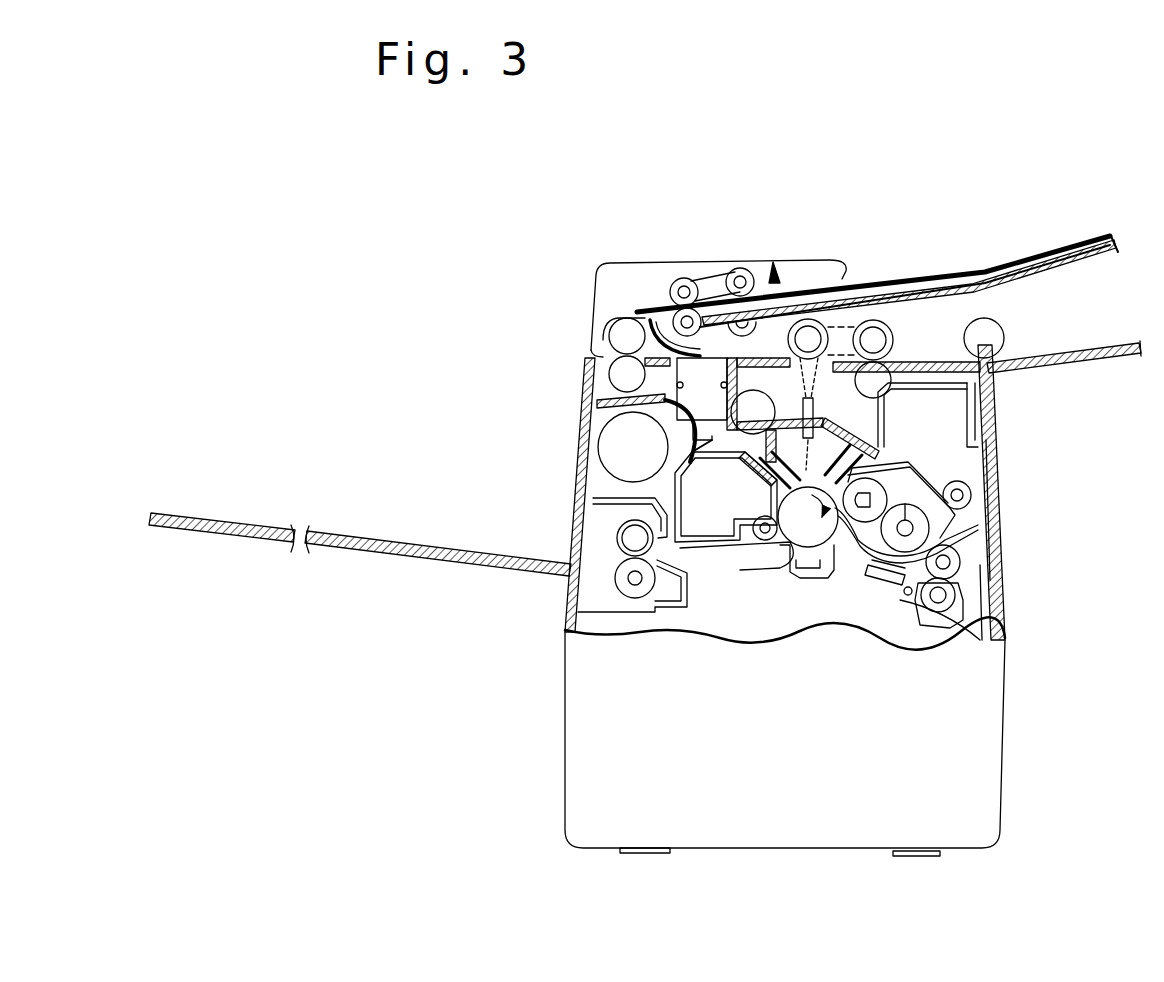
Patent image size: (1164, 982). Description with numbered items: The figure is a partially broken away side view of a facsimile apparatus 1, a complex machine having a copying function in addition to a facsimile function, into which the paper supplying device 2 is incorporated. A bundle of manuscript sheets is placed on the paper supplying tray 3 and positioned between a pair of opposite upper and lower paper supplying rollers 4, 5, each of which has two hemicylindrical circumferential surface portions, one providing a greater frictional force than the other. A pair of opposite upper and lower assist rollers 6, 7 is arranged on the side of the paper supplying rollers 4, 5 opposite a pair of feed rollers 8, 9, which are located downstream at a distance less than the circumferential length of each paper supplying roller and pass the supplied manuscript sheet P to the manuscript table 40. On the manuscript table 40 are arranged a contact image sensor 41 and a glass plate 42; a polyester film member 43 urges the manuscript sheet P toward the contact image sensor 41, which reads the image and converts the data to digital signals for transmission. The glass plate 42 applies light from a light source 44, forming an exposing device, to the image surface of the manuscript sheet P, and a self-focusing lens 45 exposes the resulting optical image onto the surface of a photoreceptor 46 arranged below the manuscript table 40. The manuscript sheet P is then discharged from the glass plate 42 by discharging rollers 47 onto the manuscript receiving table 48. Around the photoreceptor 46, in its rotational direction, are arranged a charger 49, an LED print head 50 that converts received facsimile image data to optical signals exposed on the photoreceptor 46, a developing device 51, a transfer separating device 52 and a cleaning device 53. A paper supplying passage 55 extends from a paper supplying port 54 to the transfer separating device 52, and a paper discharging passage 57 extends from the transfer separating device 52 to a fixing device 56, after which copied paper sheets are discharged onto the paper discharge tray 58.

The facsimile apparatus 1 is at (1028, 557).
The paper supplying device 2 is at (787, 290).
The paper supplying tray 3 is at (1030, 273).
The upper paper supplying roller 4 is at (680, 280).
The lower paper supplying roller 5 is at (665, 330).
The upper assist roller 6 is at (737, 270).
The lower assist roller 7 is at (762, 292).
The feed roller 8 is at (613, 338).
The feed roller 9 is at (617, 377).
The manuscript table 40 is at (936, 372).
The contact image sensor 41 is at (667, 395).
The glass plate 42 is at (805, 322).
The polyester film member 43 is at (612, 322).
The light source 44 is at (772, 398).
The self-focusing lens 45 is at (830, 408).
The photoreceptor 46 is at (805, 548).
The discharging rollers 47 is at (878, 322).
The manuscript receiving table 48 is at (1080, 366).
The charger 49 is at (760, 477).
The LED print head 50 is at (880, 455).
The developing device 51 is at (932, 513).
The transfer separating device 52 is at (820, 577).
The cleaning device 53 is at (692, 489).
The paper supplying port 54 is at (1000, 600).
The paper supplying passage 55 is at (892, 587).
The fixing device 56 is at (630, 590).
The paper discharging passage 57 is at (737, 553).
The paper discharge tray 58 is at (430, 563).
The manuscript sheet P is at (997, 267).